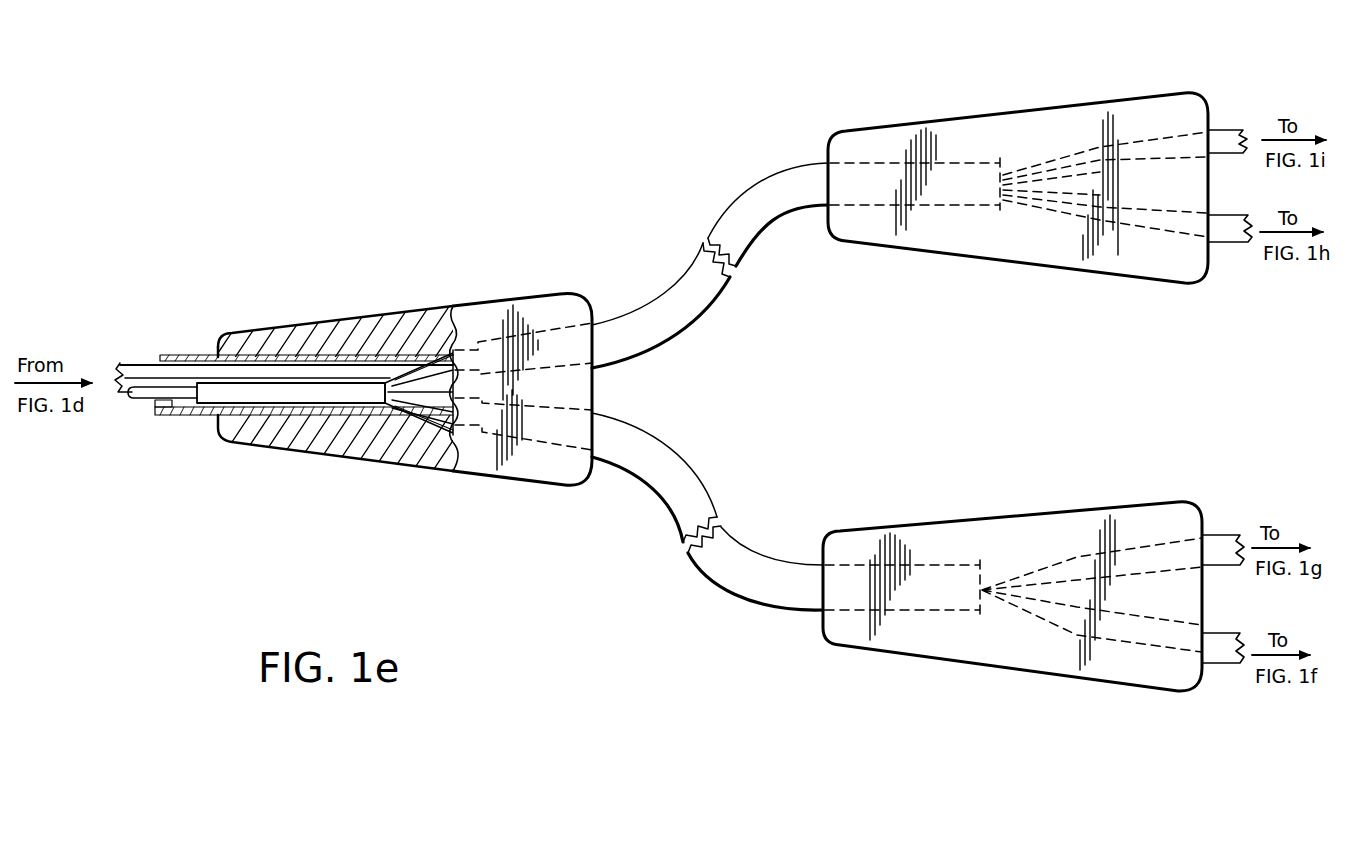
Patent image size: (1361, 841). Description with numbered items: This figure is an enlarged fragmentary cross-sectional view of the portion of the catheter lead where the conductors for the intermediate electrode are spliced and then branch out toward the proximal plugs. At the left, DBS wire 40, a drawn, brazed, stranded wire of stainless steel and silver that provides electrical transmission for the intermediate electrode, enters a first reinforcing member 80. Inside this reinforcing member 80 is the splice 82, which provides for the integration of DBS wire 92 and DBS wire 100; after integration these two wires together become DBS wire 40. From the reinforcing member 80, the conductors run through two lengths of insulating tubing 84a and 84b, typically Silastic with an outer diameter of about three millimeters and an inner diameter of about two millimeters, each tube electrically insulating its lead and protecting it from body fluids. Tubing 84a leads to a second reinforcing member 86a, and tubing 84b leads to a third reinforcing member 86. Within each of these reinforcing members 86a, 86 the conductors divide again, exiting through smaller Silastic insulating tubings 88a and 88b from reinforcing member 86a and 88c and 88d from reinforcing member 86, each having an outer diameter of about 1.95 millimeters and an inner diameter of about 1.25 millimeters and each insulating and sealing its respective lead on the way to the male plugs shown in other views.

The DBS wire 40 is at (171, 415).
The reinforcing member 80 is at (542, 472).
The splice 82 is at (262, 403).
The insulating tubing 84a is at (643, 318).
The insulating tubing 84b is at (677, 462).
The reinforcing member 86 is at (1010, 655).
The reinforcing member 86a is at (1050, 258).
The insulating tubing 88a is at (1225, 133).
The insulating tubing 88b is at (1228, 233).
The insulating tubing 88c is at (1232, 538).
The insulating tubing 88d is at (1222, 652).
The DBS wire 92 is at (408, 392).
The DBS wire 100 is at (427, 410).